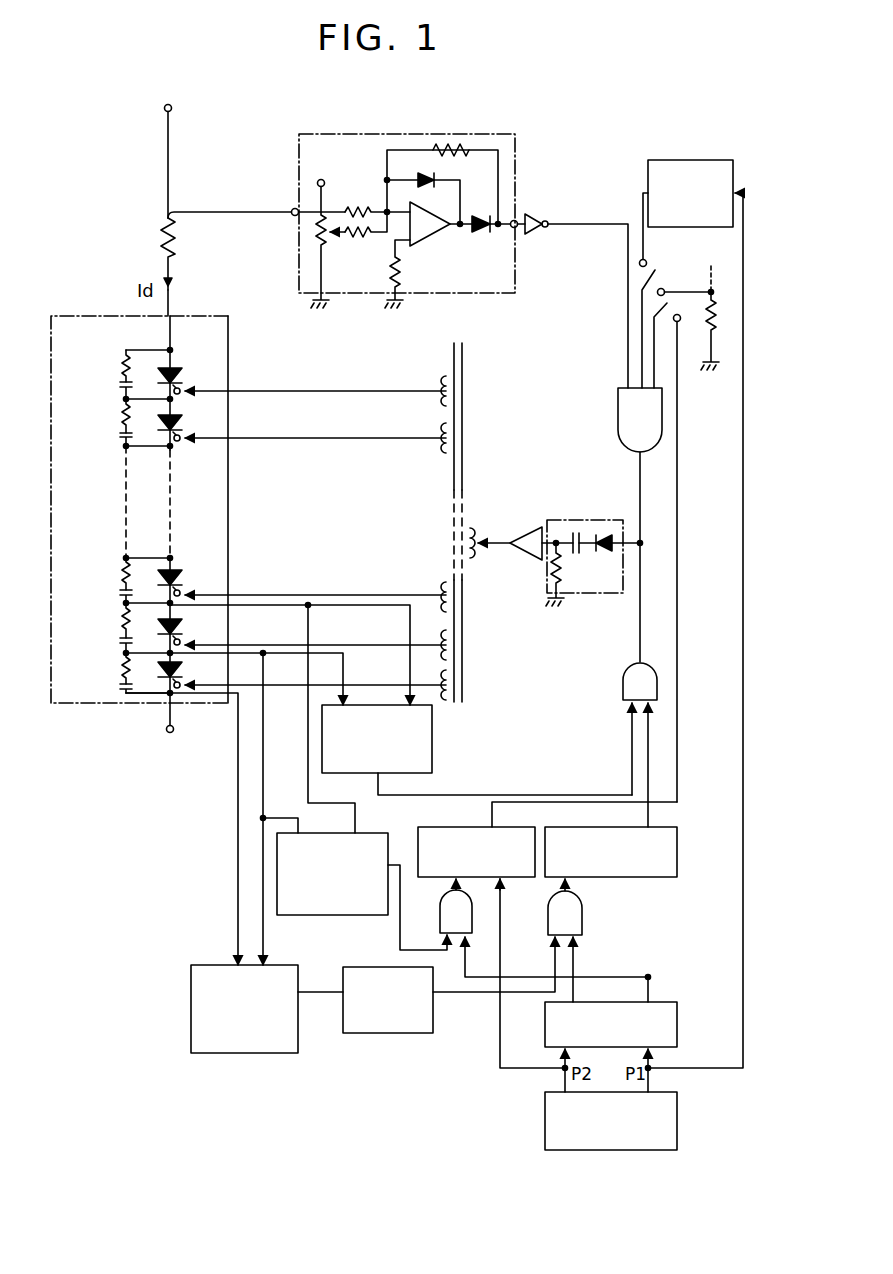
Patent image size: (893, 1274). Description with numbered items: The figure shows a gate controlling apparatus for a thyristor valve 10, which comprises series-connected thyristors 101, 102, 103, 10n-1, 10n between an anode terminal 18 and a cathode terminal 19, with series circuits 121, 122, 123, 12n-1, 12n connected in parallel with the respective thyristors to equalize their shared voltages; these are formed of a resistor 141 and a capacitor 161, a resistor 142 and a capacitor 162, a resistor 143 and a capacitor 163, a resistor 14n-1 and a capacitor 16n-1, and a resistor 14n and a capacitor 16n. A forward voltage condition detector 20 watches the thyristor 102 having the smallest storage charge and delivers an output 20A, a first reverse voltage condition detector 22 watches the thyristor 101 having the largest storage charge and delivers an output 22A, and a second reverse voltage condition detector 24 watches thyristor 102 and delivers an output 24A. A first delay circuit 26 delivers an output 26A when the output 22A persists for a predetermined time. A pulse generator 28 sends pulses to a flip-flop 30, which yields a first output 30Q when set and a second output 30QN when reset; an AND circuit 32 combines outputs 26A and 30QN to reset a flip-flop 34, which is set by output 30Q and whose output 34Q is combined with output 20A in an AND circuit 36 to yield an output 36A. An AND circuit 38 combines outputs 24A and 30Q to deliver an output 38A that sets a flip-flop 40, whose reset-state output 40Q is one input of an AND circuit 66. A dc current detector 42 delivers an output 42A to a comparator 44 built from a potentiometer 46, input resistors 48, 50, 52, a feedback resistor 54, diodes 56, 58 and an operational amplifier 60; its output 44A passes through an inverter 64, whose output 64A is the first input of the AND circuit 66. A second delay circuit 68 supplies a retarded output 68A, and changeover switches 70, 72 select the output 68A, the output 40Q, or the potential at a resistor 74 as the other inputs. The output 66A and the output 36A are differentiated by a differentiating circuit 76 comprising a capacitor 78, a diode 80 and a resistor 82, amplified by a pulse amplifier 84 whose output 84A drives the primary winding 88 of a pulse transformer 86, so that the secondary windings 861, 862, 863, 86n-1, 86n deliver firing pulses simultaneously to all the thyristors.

The thyristor valve 10 is at (204, 316).
The thyristor 10n is at (196, 374).
The thyristor 10n-1 is at (196, 421).
The thyristor 101 is at (190, 671).
The thyristor 102 is at (182, 631).
The thyristor 103 is at (196, 576).
The series circuit 12n is at (165, 375).
The series circuit 12n-1 is at (146, 450).
The series circuit 121 is at (165, 678).
The series circuit 122 is at (165, 631).
The series circuit 123 is at (165, 583).
The resistor 14n is at (122, 360).
The resistor 14n-1 is at (120, 410).
The resistor 141 is at (124, 664).
The resistor 142 is at (124, 618).
The resistor 143 is at (124, 568).
The capacitor 16n is at (120, 385).
The capacitor 16n-1 is at (120, 436).
The capacitor 161 is at (122, 688).
The capacitor 162 is at (124, 646).
The capacitor 163 is at (124, 596).
The anode terminal 18 is at (172, 108).
The cathode terminal 19 is at (174, 729).
The forward voltage condition detector 20 is at (432, 752).
The output signal 20A is at (382, 778).
The first reverse voltage condition detector 22 is at (200, 964).
The output signal 22A is at (320, 1004).
The second reverse voltage condition detector 24 is at (330, 915).
The output signal 24A is at (396, 862).
The first delay circuit 26 is at (372, 967).
The output signal 26A is at (494, 977).
The pulse generator 28 is at (544, 1112).
The flip-flop 30 is at (677, 1022).
The first output signal 30Q is at (652, 977).
The second output signal 30QN is at (620, 986).
The AND circuit 32 is at (582, 924).
The flip-flop 34 is at (677, 855).
The output signal 34Q is at (652, 808).
The AND circuit 36 is at (623, 682).
The output signal 36A is at (640, 642).
The AND circuit 38 is at (440, 928).
The output signal 38A is at (450, 884).
The flip-flop 40 is at (460, 826).
The output signal 40Q is at (540, 808).
The dc current detector 42 is at (176, 238).
The output signal 42A is at (233, 202).
The comparator 44 is at (476, 113).
The output signal 44A is at (514, 228).
The potentiometer 46 is at (323, 252).
The input resistor 48 is at (357, 200).
The input resistor 50 is at (355, 238).
The input resistor 52 is at (399, 266).
The feedback resistor 54 is at (462, 154).
The diode 56 is at (484, 234).
The diode 58 is at (438, 167).
The operational amplifier 60 is at (433, 234).
The inverter 64 is at (532, 212).
The output signal 64A is at (580, 224).
The AND circuit 66 is at (618, 411).
The output signal 66A is at (640, 480).
The second delay circuit 68 is at (688, 160).
The output signal 68A is at (642, 193).
The changeover switch 70 is at (656, 282).
The changeover switch 72 is at (662, 320).
The resistor 74 is at (722, 302).
The differentiating circuit 76 is at (576, 520).
The capacitor 78 is at (576, 556).
The diode 80 is at (604, 553).
The resistor 82 is at (548, 592).
The pulse amplifier 84 is at (522, 532).
The output signal 84A is at (500, 543).
The pulse transformer 86 is at (463, 428).
The secondary winding 86n is at (440, 382).
The secondary winding 86n-1 is at (440, 428).
The secondary winding 861 is at (450, 702).
The secondary winding 862 is at (452, 645).
The secondary winding 863 is at (444, 582).
The primary winding 88 is at (476, 528).